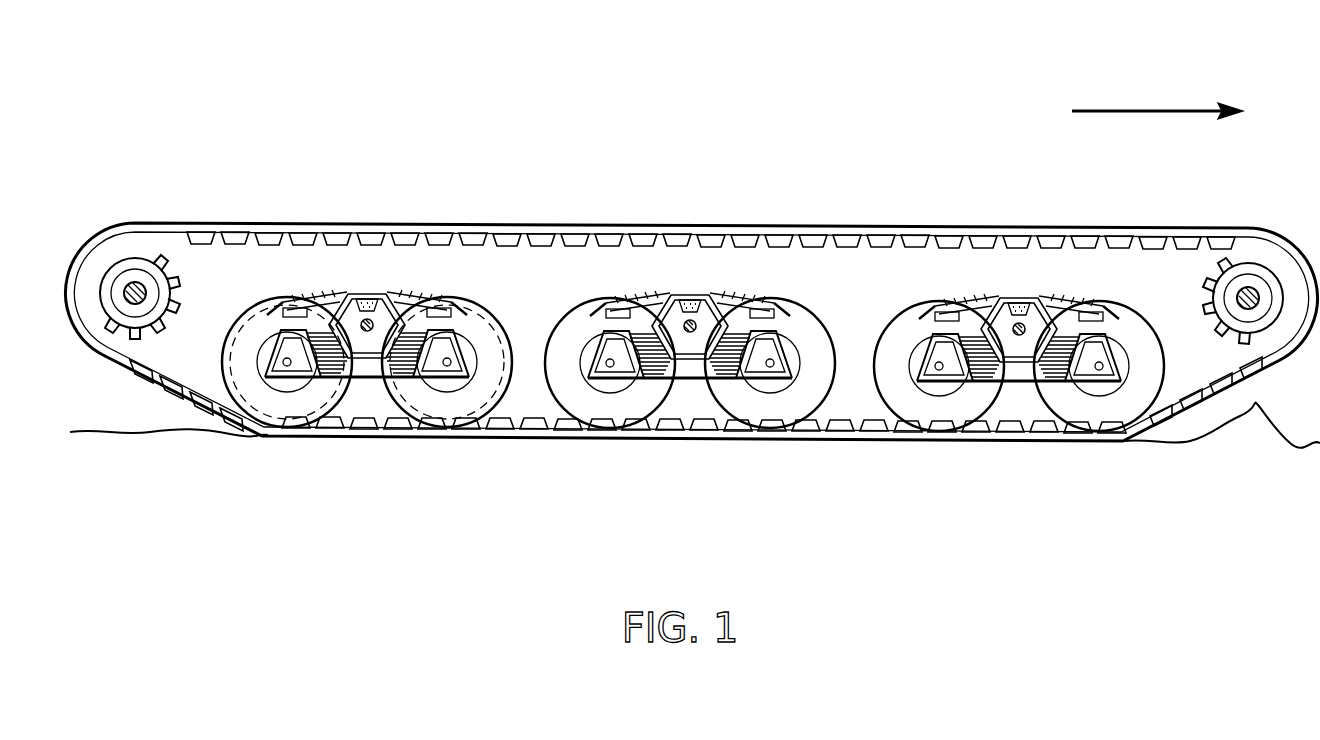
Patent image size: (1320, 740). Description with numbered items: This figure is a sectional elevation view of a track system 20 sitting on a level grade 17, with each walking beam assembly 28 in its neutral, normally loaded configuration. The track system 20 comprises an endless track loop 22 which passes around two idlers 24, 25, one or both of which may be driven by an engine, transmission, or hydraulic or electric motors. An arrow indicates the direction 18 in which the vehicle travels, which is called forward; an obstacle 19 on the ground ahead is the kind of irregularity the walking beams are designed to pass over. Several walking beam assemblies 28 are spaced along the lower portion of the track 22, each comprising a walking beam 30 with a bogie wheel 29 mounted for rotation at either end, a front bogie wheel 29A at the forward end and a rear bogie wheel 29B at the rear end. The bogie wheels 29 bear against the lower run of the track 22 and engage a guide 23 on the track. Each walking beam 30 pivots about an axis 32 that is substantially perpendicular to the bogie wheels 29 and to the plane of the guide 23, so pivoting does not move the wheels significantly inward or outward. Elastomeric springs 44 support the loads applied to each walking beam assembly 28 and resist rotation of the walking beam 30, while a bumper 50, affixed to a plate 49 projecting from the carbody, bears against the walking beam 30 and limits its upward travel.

The level grade 17 is at (135, 432).
The direction of travel 18 is at (1125, 111).
The obstacle 19 is at (1262, 400).
The track system 20 is at (740, 170).
The endless track loop 22 is at (447, 222).
The guide 23 is at (848, 414).
The idler 24 is at (1258, 262).
The idler 25 is at (128, 256).
The walking beam assembly 28 is at (579, 293).
The bogie wheel 29 is at (287, 407).
The front bogie wheel 29A is at (1130, 328).
The rear bogie wheel 29B is at (881, 328).
The walking beam 30 is at (380, 382).
The axis 32 is at (400, 300).
The elastomeric springs 44 is at (683, 375).
The plate 49 is at (368, 288).
The bumper 50 is at (332, 296).